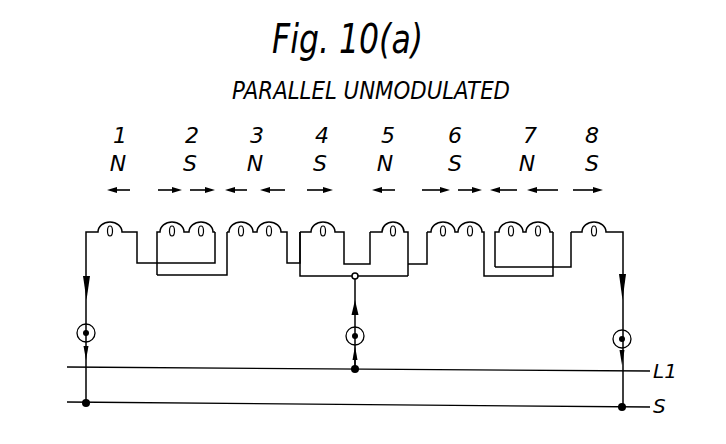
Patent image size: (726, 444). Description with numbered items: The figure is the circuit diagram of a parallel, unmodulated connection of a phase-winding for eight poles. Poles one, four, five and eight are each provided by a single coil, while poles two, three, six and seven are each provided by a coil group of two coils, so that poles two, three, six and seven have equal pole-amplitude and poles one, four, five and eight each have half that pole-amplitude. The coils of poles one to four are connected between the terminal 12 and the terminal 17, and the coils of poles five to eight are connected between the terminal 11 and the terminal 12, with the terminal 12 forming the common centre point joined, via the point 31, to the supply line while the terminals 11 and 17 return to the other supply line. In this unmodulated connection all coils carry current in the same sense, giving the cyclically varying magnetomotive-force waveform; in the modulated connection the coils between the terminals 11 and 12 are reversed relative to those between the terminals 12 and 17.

The terminal 17 is at (95, 331).
The terminal 12 is at (364, 334).
The terminal 11 is at (631, 337).
The current arrow / connection to line L1 31 is at (349, 360).